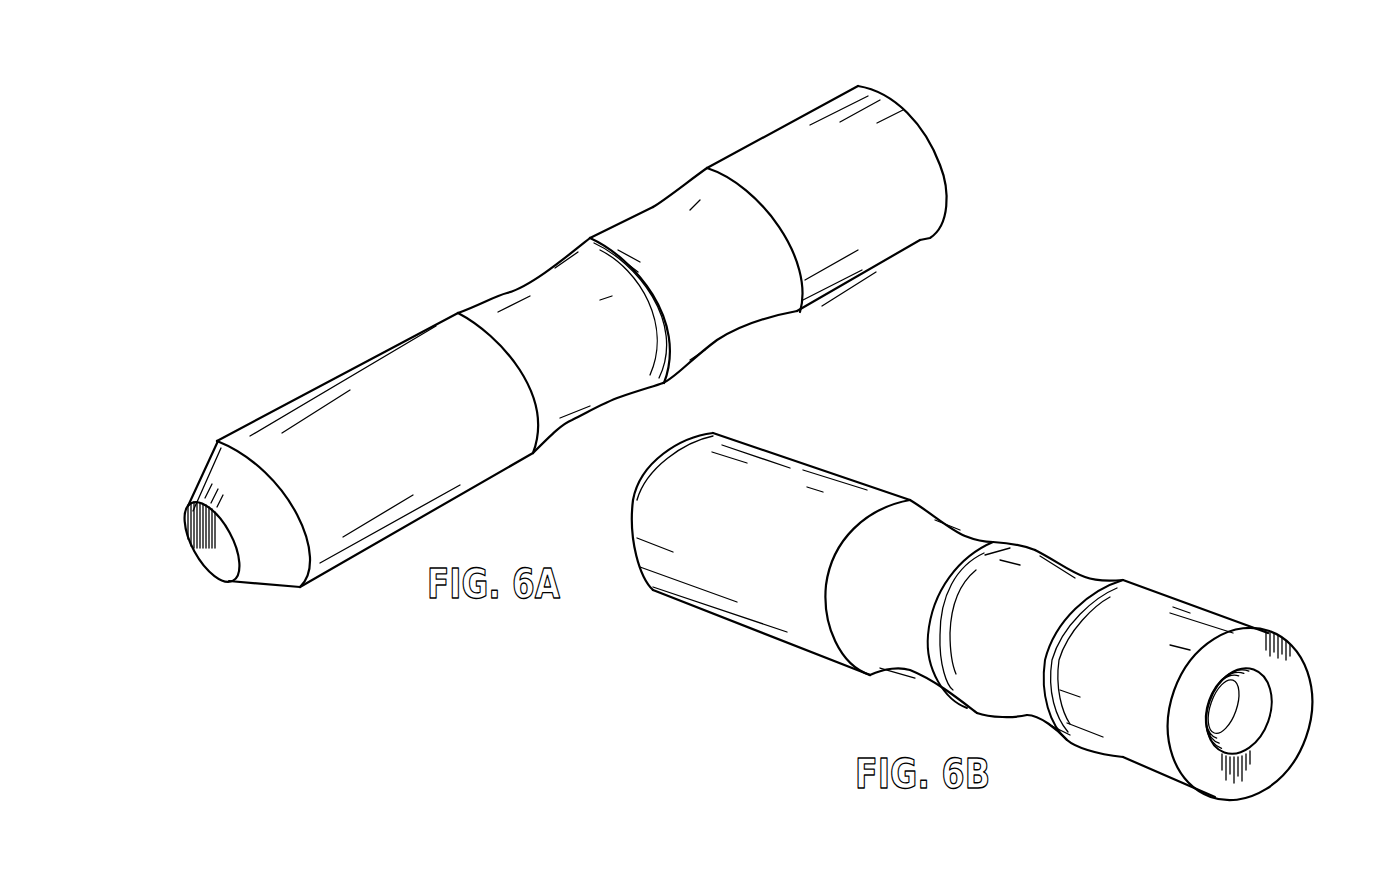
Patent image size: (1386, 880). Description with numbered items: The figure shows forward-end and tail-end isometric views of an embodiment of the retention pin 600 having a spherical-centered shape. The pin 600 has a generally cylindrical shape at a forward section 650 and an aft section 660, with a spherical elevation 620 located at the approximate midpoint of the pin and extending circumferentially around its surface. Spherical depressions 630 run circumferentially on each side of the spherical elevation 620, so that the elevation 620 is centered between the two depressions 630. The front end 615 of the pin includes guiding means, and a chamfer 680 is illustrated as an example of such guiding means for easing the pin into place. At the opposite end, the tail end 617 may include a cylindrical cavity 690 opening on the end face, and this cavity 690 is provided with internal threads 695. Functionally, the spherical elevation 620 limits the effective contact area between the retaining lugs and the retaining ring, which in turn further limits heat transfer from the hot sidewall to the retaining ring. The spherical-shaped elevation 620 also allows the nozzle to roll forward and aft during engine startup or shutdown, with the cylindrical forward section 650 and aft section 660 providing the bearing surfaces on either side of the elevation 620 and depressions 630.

In FIG. 6A, the retention pin 600 is at (416, 255).
In FIG. 6B, the retention pin 600 is at (1088, 459).
In FIG. 6A, the front end 615 is at (190, 528).
In FIG. 6B, the front end 615 is at (632, 500).
In FIG. 6A, the tail end 617 is at (943, 163).
In FIG. 6B, the tail end 617 is at (1300, 652).
In FIG. 6A, the spherical elevation 620 is at (587, 237).
In FIG. 6B, the spherical elevation 620 is at (1022, 542).
In FIG. 6A, the spherical depressions 630 is at (518, 290).
In FIG. 6B, the spherical depressions 630 is at (973, 537).
In FIG. 6A, the forward section 650 is at (333, 379).
In FIG. 6B, the forward section 650 is at (816, 478).
In FIG. 6A, the aft section 660 is at (756, 140).
In FIG. 6B, the aft section 660 is at (1187, 600).
In FIG. 6A, the chamfer 680 is at (213, 462).
In FIG. 6B, the cylindrical cavity 690 is at (1268, 730).
In FIG. 6B, the internal threads 695 is at (1252, 740).